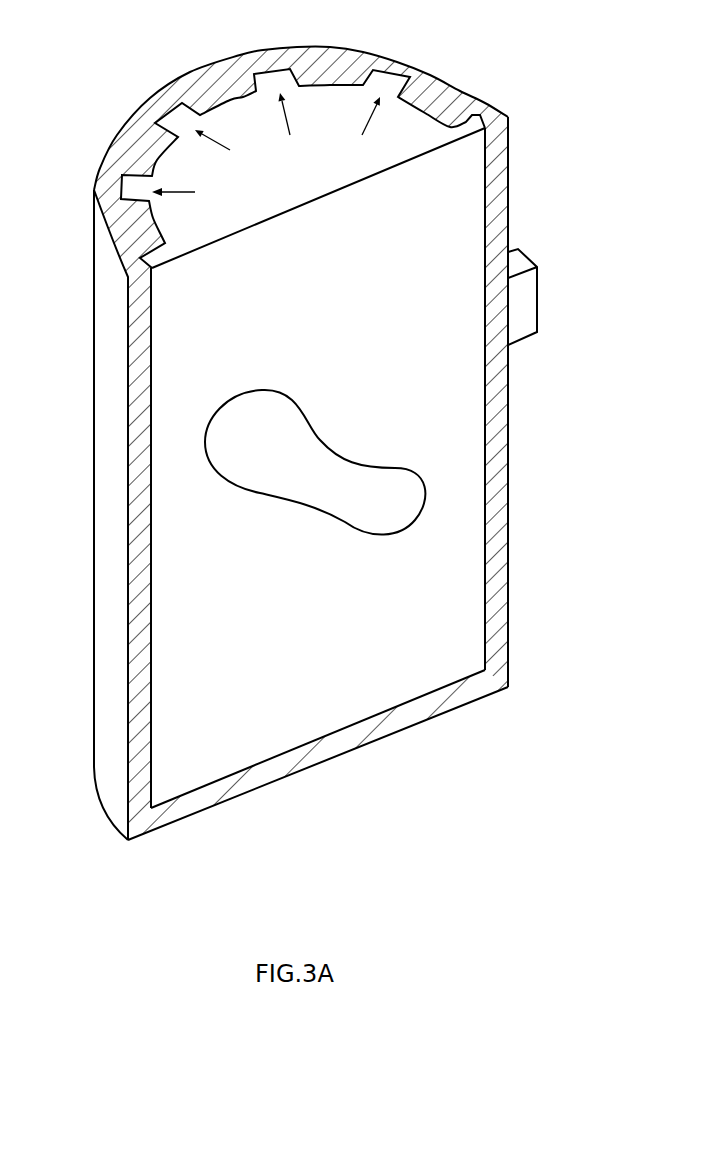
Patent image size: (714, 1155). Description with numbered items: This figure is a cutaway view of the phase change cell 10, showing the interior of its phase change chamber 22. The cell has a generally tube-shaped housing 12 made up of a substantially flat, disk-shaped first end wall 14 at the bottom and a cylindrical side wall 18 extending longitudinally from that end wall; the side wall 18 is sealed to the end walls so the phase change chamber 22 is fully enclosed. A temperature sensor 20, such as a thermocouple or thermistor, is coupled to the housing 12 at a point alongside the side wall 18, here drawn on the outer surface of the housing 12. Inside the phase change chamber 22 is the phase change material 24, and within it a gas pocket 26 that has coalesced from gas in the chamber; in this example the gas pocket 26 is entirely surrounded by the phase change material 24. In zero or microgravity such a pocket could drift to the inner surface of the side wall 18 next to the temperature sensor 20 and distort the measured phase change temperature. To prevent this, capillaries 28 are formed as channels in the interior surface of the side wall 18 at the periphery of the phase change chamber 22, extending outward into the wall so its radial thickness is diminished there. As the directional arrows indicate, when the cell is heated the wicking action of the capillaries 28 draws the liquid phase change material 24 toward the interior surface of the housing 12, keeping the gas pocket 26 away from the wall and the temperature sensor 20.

The phase change cell 10 is at (525, 80).
The housing 12 is at (103, 623).
The first end wall 14 is at (435, 708).
The side wall 18 is at (498, 470).
The temperature sensor 20 is at (522, 307).
The phase change chamber 22 is at (249, 608).
The phase change material 24 is at (265, 723).
The gas pocket 26 is at (264, 461).
The capillaries 28 is at (390, 83).